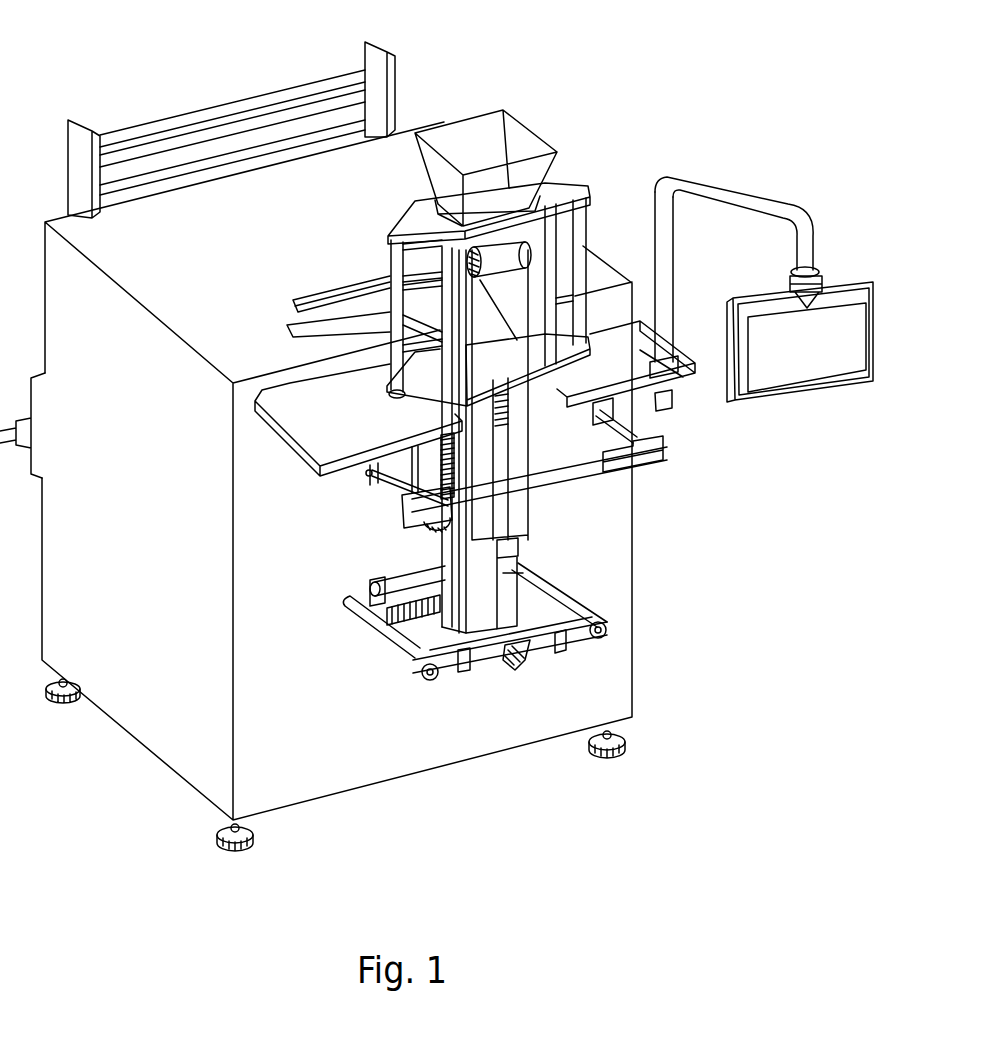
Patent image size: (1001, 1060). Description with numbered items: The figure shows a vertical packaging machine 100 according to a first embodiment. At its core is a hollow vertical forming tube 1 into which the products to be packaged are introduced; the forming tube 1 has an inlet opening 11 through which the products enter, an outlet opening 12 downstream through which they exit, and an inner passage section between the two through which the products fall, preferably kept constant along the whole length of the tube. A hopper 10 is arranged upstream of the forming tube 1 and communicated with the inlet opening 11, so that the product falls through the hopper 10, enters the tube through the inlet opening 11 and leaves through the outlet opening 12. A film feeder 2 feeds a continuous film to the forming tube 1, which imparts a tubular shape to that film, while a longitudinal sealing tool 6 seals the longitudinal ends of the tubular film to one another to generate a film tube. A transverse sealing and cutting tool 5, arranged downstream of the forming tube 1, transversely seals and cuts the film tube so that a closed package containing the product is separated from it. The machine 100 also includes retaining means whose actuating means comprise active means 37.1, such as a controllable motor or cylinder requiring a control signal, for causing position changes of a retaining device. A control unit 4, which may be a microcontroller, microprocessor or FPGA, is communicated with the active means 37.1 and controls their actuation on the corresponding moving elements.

The vertical packaging machine 100 is at (452, 434).
The forming tube 1 is at (503, 573).
The film feeder 2 is at (224, 90).
The control unit 4 is at (818, 370).
The transverse sealing and cutting tool 5 is at (564, 660).
The longitudinal sealing tool 6 is at (523, 517).
The hopper 10 is at (480, 140).
The inlet opening 11 is at (541, 195).
The outlet opening 12 is at (432, 631).
The active means 37.1 is at (468, 266).